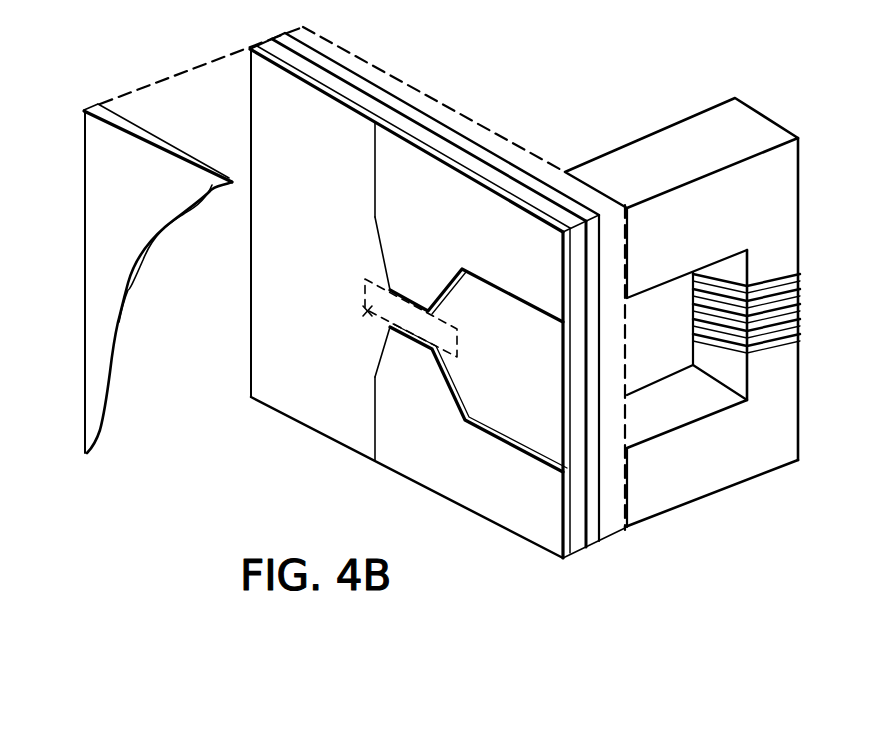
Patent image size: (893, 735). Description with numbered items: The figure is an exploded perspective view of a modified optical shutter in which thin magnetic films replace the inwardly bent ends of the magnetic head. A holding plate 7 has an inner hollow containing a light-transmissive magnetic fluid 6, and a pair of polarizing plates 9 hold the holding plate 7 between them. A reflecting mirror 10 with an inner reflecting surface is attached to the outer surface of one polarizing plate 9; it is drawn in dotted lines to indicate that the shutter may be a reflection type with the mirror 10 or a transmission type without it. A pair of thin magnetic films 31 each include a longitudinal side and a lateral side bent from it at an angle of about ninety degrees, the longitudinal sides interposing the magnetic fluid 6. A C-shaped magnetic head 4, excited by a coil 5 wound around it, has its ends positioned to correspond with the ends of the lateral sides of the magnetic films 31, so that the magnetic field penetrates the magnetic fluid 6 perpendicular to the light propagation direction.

The magnetic head 4 is at (685, 324).
The coil 5 is at (769, 313).
The light-transmissive magnetic fluid 6 is at (366, 311).
The holding plate 7 is at (429, 345).
The polarizing plate 9 is at (325, 342).
The reflecting mirror 10 is at (608, 538).
The thin magnetic film 31 is at (471, 360).